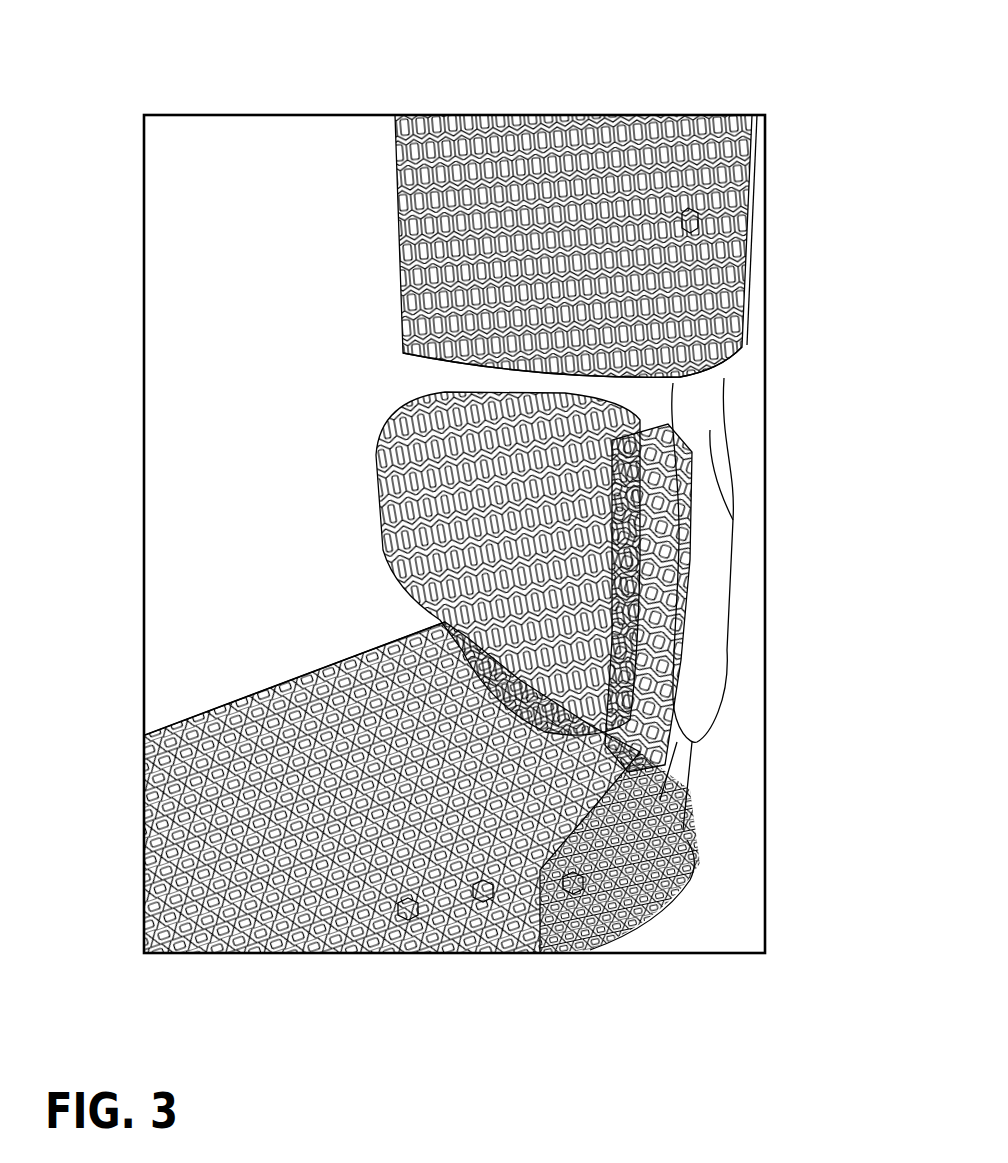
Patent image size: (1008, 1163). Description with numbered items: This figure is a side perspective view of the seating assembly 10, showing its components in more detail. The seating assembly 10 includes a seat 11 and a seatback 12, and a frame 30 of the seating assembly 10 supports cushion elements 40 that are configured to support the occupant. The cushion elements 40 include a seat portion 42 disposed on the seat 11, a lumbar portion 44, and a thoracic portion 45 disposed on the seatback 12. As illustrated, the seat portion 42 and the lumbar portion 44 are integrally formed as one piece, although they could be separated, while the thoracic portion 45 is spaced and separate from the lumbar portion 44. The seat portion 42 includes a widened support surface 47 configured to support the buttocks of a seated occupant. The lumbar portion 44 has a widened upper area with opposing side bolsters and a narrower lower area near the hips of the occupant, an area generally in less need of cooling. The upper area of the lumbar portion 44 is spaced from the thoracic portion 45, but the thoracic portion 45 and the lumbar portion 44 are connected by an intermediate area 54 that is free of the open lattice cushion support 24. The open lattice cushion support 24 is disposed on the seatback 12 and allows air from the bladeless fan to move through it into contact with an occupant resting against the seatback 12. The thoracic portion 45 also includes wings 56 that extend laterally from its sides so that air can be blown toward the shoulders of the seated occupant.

The seating assembly 10 is at (592, 90).
The seatback 12 is at (757, 308).
The thoracic portion 45 is at (693, 218).
The wings 56 is at (407, 333).
The frame 30 is at (697, 637).
The intermediate area 54 is at (547, 393).
The lumbar portion 44 is at (568, 493).
The cushion elements 40 is at (280, 580).
The seat 11 is at (218, 697).
The open lattice cushion support 24 is at (418, 905).
The seat portion 42 is at (483, 890).
The widened support surface 47 is at (573, 883).